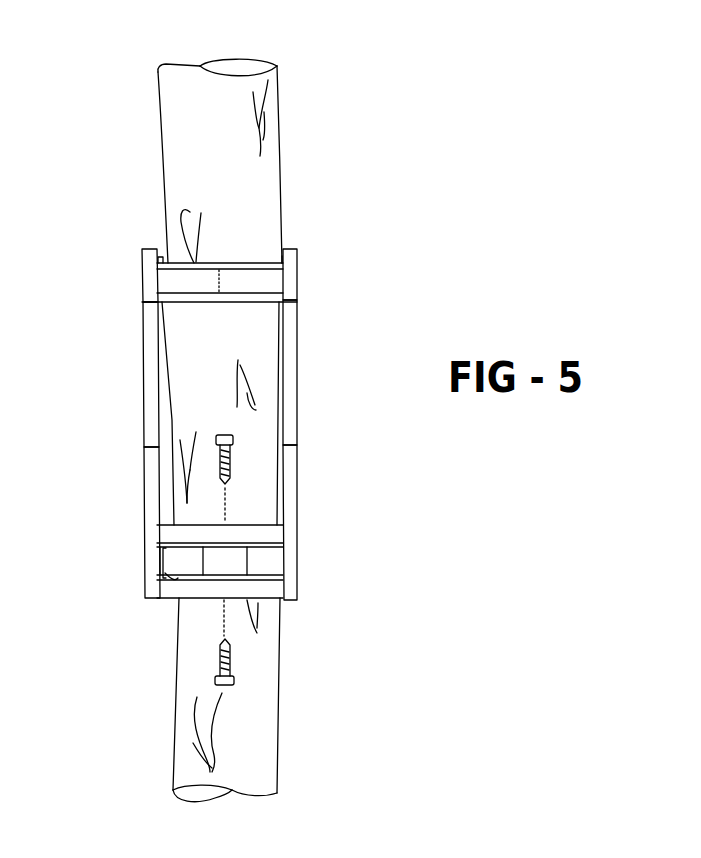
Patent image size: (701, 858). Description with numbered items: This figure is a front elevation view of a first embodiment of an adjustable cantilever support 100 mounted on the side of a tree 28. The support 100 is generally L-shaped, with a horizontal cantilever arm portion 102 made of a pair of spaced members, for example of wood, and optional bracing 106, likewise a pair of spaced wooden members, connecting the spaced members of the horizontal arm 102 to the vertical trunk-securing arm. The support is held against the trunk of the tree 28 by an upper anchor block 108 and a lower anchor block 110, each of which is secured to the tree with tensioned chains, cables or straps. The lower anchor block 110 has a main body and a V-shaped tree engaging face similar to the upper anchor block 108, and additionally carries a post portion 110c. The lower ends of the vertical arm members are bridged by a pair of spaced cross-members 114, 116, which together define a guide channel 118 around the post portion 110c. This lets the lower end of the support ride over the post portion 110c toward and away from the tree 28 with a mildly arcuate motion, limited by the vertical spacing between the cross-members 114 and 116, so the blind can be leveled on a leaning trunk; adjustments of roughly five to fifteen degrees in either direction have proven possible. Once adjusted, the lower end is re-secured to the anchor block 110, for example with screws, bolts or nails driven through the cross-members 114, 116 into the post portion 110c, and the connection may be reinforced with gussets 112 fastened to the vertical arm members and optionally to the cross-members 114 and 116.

The tree 28 is at (180, 195).
The adjustable cantilever support 100 is at (421, 538).
The horizontal cantilever arm portion 102 is at (148, 290).
The bracing 106 is at (145, 440).
The upper anchor block 108 is at (272, 276).
The lower anchor block 110 is at (263, 558).
The post portion 110c is at (207, 559).
The gussets 112 is at (150, 456).
The cross-member 114 is at (270, 535).
The cross-member 116 is at (275, 590).
The guide channel 118 is at (176, 578).